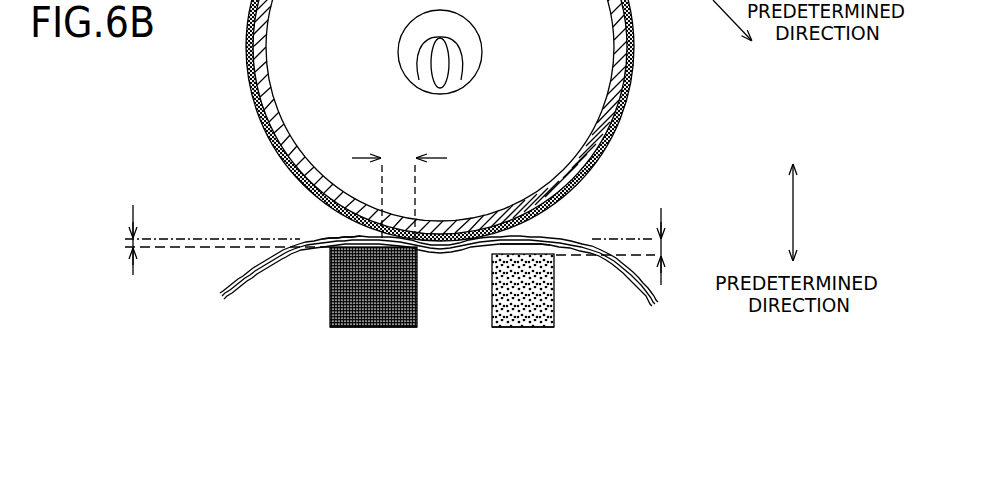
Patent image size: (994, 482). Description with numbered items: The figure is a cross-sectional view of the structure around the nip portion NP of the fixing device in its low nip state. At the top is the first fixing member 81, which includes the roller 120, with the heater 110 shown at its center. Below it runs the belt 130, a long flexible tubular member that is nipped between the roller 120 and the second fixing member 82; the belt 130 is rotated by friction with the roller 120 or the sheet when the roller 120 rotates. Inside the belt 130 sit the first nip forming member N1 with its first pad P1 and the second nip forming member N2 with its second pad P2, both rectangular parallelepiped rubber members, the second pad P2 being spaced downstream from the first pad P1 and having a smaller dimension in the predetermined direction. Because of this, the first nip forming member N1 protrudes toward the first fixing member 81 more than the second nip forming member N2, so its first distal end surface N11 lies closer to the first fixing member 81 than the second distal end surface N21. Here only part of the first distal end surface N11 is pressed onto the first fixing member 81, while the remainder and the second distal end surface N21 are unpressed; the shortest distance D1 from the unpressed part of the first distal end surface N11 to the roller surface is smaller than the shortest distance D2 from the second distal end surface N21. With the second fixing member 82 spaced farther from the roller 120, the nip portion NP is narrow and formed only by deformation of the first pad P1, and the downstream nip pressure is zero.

The first fixing member 81 is at (664, 50).
The roller 120 is at (246, 48).
The heater 110 is at (484, 53).
The nip portion NP is at (399, 183).
The shortest distance D1 is at (210, 240).
The shortest distance D2 is at (628, 246).
The belt 130 is at (225, 275).
The second fixing member 82 is at (623, 230).
The first distal end surface N11 is at (336, 233).
The second distal end surface N21 is at (544, 251).
The first nip forming member N1 is at (326, 308).
The first pad P1 is at (380, 328).
The second nip forming member N2 is at (562, 310).
The second pad P2 is at (522, 328).